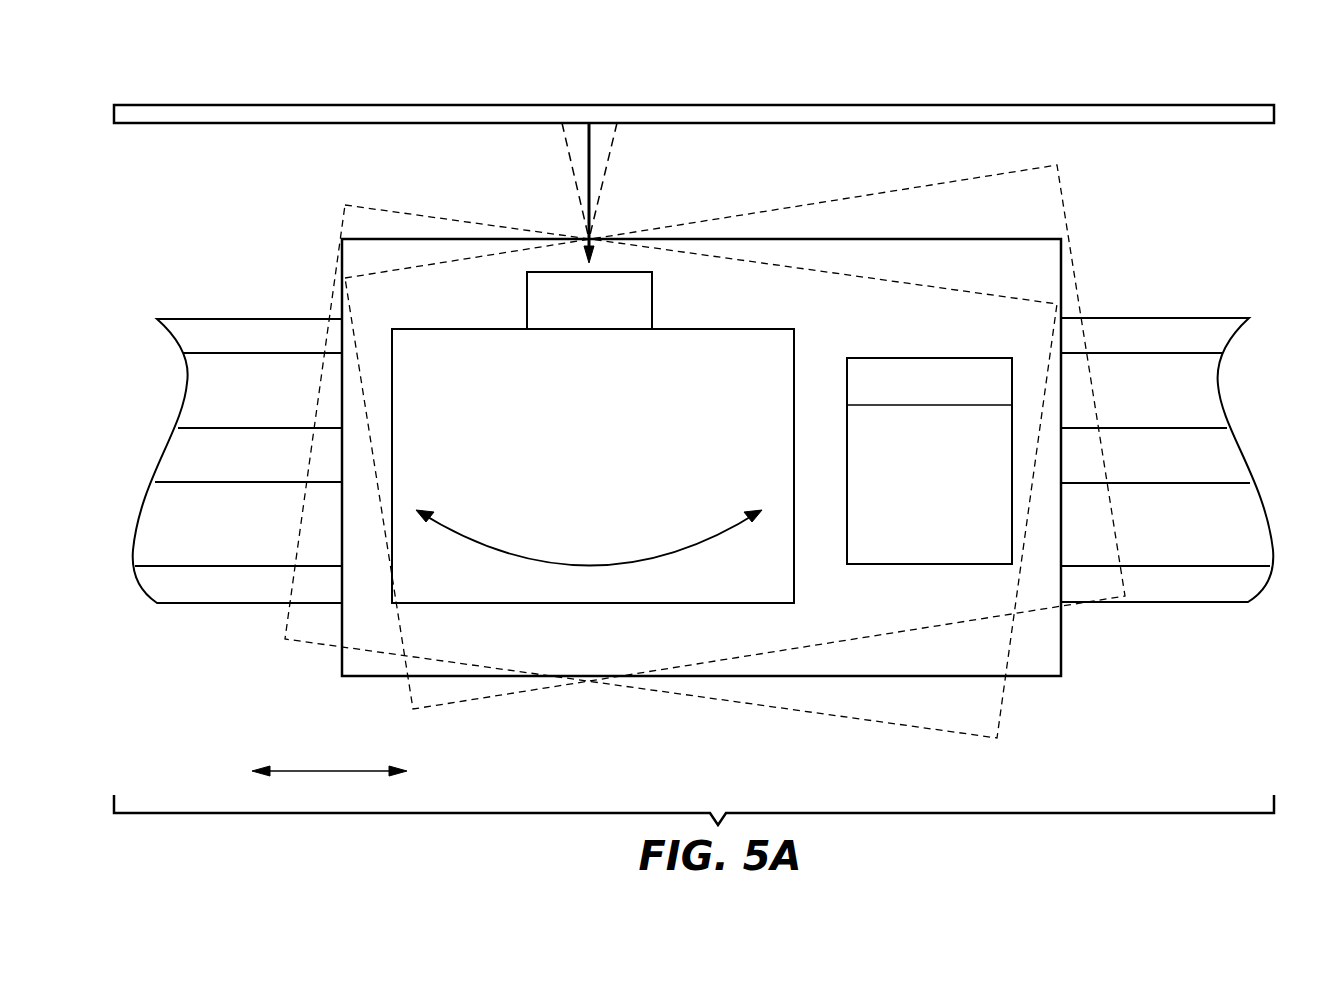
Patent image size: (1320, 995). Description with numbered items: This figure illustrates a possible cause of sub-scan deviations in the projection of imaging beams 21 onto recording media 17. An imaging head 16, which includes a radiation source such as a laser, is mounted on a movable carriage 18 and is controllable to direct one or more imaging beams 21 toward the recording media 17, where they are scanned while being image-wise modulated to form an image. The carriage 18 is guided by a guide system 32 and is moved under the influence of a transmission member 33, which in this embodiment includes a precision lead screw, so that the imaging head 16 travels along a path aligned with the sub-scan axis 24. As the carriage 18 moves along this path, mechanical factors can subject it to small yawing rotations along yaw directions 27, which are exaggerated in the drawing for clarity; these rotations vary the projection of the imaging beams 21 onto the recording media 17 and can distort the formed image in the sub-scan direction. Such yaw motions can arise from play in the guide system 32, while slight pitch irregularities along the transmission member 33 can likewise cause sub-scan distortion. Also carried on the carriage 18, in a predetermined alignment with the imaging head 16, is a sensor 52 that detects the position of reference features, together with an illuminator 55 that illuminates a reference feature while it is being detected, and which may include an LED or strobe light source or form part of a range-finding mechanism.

The recording media 17 is at (267, 105).
The imaging beams 21 is at (588, 182).
The carriage 18 is at (863, 248).
The imaging head 16 is at (477, 342).
The sensor 52 is at (907, 367).
The illuminator 55 is at (866, 420).
The yaw directions 27 is at (478, 541).
The transmission member 33 is at (270, 470).
The guide system 32 is at (1155, 325).
The sub-scan axis 24 is at (299, 771).